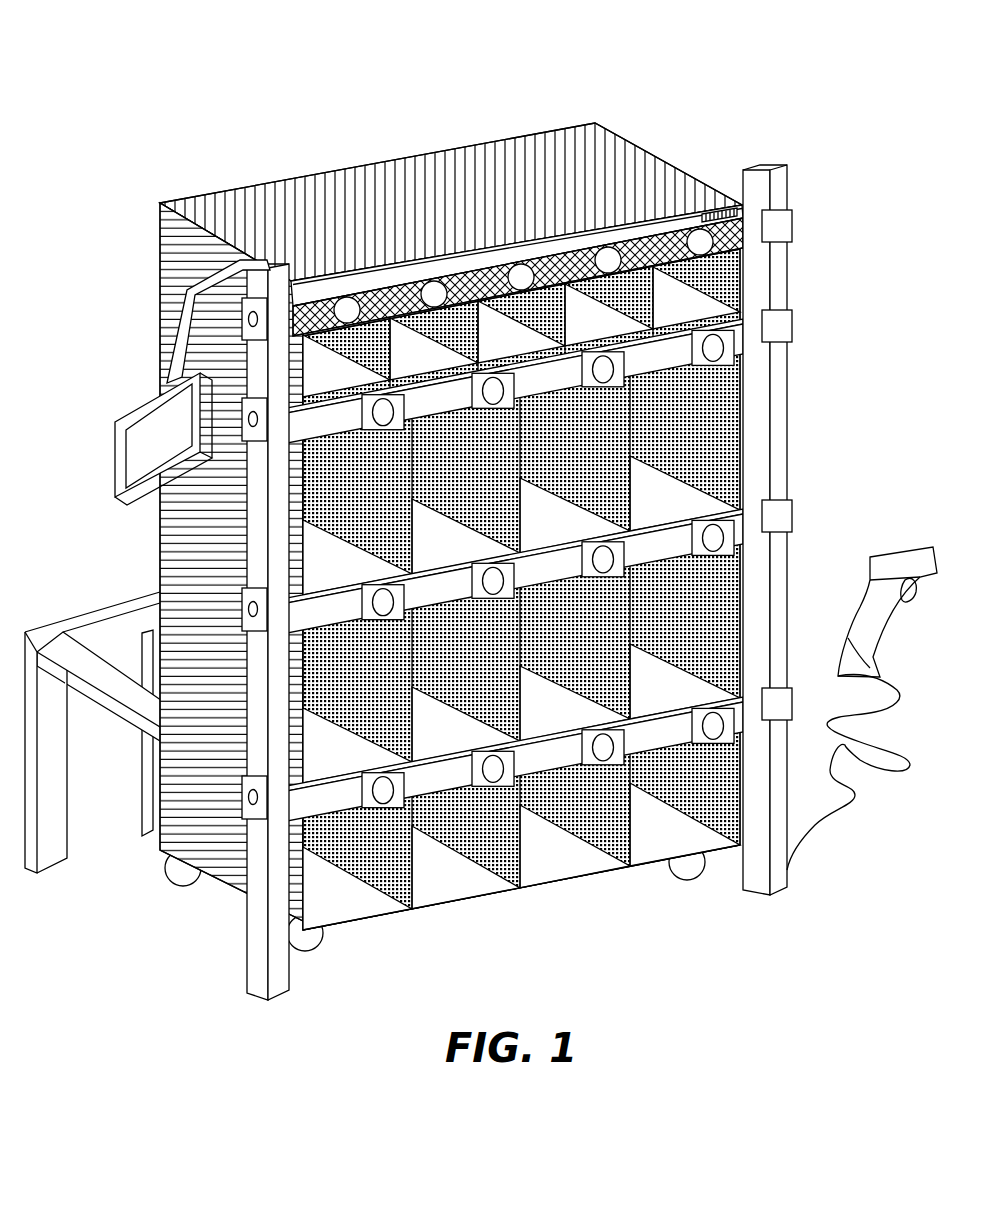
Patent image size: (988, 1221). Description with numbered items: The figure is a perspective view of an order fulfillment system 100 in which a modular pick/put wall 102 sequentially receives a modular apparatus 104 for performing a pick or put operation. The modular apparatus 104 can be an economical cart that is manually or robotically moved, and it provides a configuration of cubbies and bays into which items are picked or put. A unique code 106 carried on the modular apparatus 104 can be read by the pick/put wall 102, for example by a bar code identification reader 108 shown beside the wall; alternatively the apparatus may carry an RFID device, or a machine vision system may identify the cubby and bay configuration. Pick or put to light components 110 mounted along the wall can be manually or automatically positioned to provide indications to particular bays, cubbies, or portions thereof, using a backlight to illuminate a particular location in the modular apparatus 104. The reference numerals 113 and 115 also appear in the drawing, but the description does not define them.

The order fulfillment system 100 is at (160, 118).
The modular pick/put wall 102 is at (787, 441).
The modular apparatus 104 is at (632, 155).
The unique code 106 is at (730, 204).
The bar code identification reader 108 is at (907, 547).
The pick or put to light (PTL) components 110 is at (758, 309).
The light strip 113 is at (400, 290).
The light/sensor units 115 is at (349, 308).